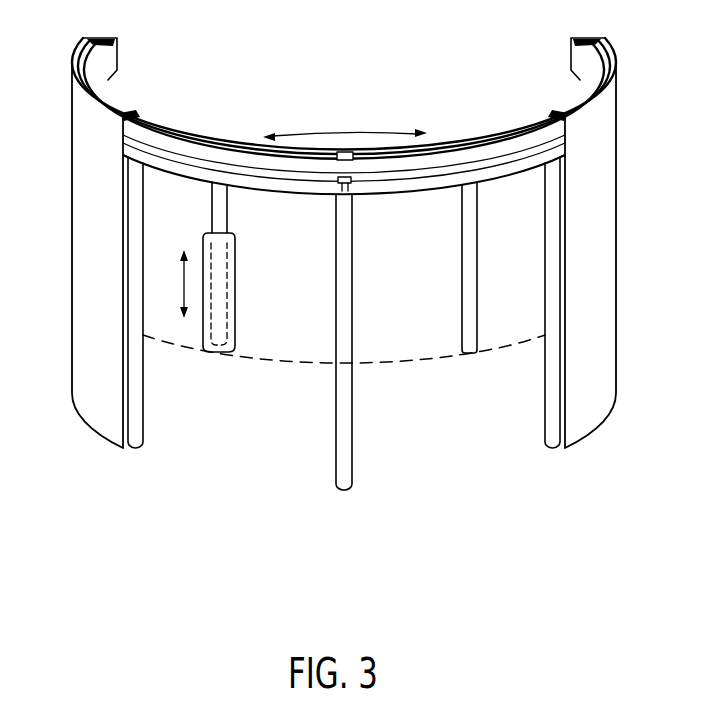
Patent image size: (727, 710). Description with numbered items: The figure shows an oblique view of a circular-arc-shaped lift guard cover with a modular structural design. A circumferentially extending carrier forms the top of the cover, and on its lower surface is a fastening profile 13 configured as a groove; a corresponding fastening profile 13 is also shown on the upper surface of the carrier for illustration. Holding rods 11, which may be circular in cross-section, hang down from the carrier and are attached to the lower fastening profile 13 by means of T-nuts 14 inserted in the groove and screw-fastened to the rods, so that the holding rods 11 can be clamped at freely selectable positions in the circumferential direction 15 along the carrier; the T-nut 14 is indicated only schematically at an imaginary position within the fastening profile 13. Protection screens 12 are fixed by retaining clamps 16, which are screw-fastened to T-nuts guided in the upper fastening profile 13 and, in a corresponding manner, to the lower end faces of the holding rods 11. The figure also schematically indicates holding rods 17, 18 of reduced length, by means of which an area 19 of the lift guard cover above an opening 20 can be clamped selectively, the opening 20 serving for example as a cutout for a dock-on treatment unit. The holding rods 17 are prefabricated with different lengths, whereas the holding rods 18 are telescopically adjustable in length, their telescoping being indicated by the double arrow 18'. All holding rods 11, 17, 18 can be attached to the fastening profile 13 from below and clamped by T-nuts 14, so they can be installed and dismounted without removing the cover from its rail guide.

The holding rods 11 is at (140, 380).
The protection screens 12 is at (87, 202).
The fastening profile 13 is at (608, 60).
The T-nut 14 is at (352, 182).
The circumferential direction 15 is at (320, 138).
The retaining clamps 16 is at (134, 114).
The holding rods of reduced length 17 is at (478, 287).
The telescopically adjustable holding rods 18 is at (249, 267).
The double arrow 18' is at (169, 284).
The area of the lift guard cover 19 is at (405, 330).
The opening 20 is at (184, 427).